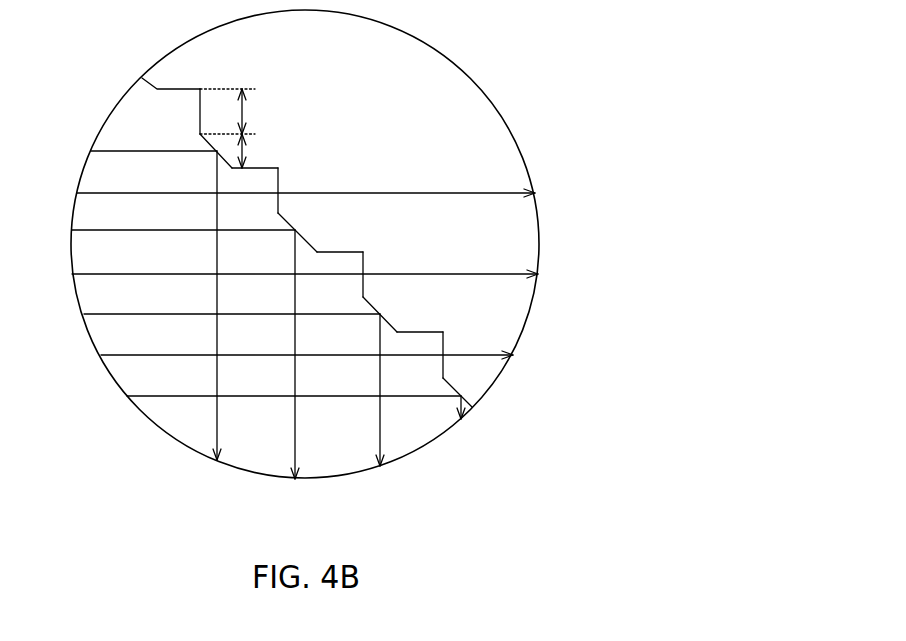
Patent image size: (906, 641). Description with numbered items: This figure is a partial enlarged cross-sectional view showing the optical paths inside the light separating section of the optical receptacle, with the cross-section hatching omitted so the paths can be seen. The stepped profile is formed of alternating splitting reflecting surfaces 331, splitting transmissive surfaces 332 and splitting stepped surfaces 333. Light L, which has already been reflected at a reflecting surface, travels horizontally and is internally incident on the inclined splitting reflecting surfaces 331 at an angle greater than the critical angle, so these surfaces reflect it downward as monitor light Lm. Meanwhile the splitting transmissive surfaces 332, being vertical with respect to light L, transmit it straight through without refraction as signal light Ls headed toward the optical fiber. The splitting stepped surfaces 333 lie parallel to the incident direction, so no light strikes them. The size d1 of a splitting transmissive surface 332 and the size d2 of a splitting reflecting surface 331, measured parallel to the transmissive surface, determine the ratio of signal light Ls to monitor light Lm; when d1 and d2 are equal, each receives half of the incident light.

The splitting reflecting surface 331 is at (393, 327).
The splitting transmissive surface 332 is at (365, 257).
The splitting stepped surface 333 is at (327, 252).
The size of splitting transmissive surface d1 is at (244, 108).
The size of splitting reflecting surface d2 is at (244, 153).
The light L is at (127, 356).
The signal light Ls is at (486, 193).
The monitor light Lm is at (380, 420).